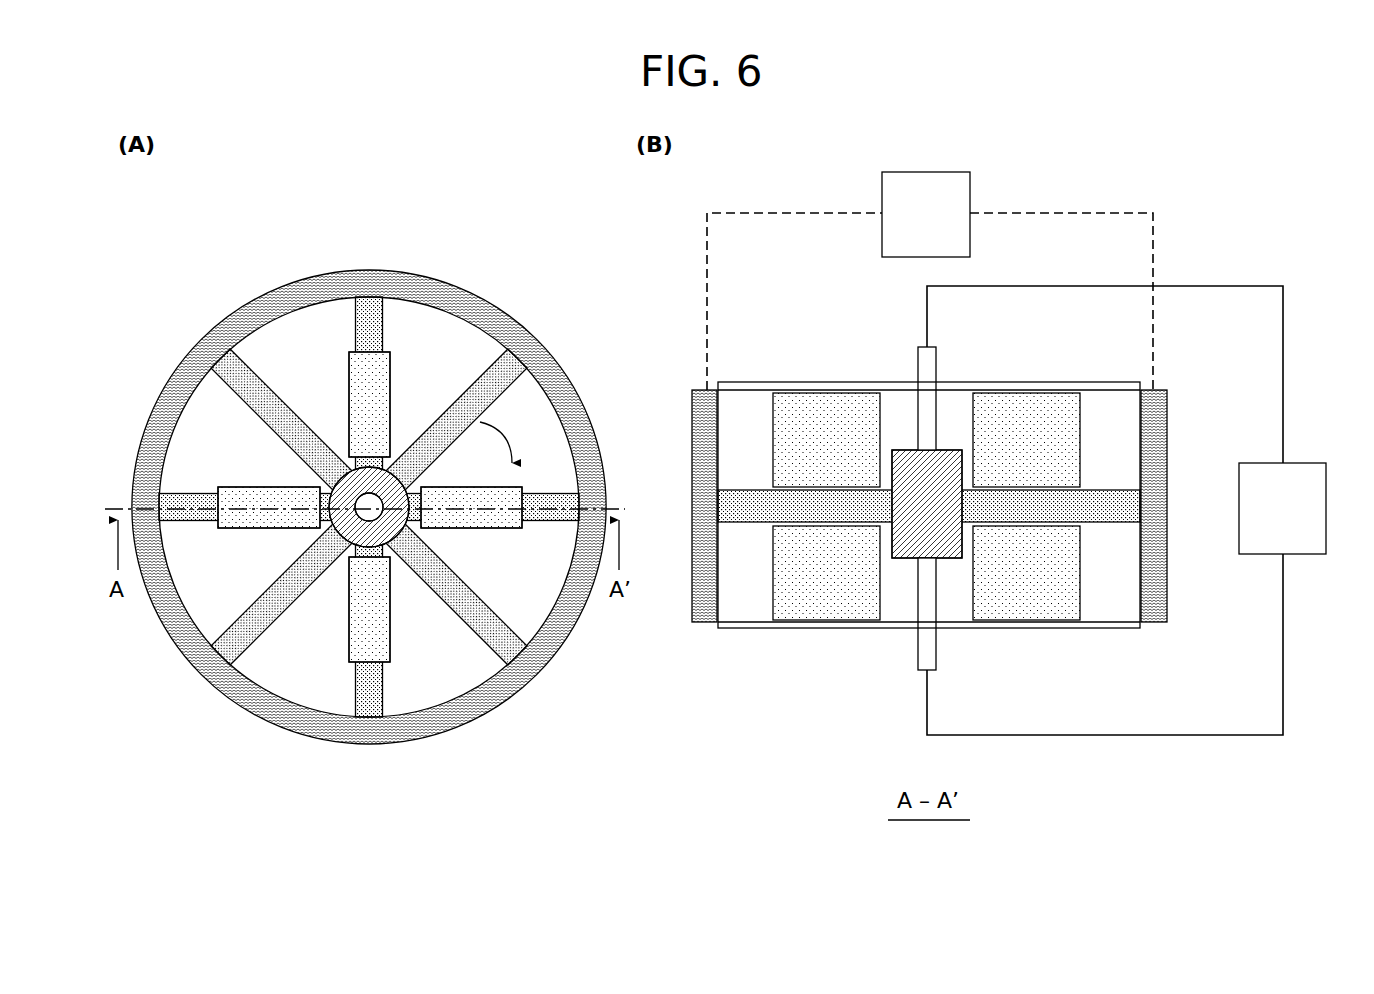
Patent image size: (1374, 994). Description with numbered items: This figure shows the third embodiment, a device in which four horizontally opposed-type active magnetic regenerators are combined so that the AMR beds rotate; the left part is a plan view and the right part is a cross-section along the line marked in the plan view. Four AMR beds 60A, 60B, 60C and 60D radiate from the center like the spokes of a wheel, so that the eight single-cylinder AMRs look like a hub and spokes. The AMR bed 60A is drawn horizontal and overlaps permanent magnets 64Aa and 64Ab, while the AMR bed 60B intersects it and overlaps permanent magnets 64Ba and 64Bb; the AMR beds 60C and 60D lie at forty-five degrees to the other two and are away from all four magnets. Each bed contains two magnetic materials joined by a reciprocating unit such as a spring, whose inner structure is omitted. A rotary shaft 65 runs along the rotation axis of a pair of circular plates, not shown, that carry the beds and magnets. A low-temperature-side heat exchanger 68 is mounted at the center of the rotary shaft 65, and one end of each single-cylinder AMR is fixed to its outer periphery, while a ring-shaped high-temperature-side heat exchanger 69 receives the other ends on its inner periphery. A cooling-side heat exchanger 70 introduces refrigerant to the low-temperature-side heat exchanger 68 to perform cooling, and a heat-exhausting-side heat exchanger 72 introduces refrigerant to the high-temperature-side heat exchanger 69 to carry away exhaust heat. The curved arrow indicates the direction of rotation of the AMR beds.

The AMR bed 60A is at (170, 520).
The AMR bed 60B is at (367, 312).
The AMR bed 60C is at (233, 365).
The AMR bed 60D is at (500, 377).
The permanent magnet 64Aa is at (225, 492).
The permanent magnet 64Ab is at (478, 508).
The permanent magnet 64Ba is at (375, 392).
The permanent magnet 64Bb is at (378, 630).
The rotary shaft 65 is at (365, 506).
The low-temperature-side heat exchanger 68 is at (398, 523).
The high-temperature-side heat exchanger 69 is at (178, 388).
The cooling-side heat exchanger 70 is at (1280, 502).
The heat-exhausting-side heat exchanger 72 is at (918, 213).